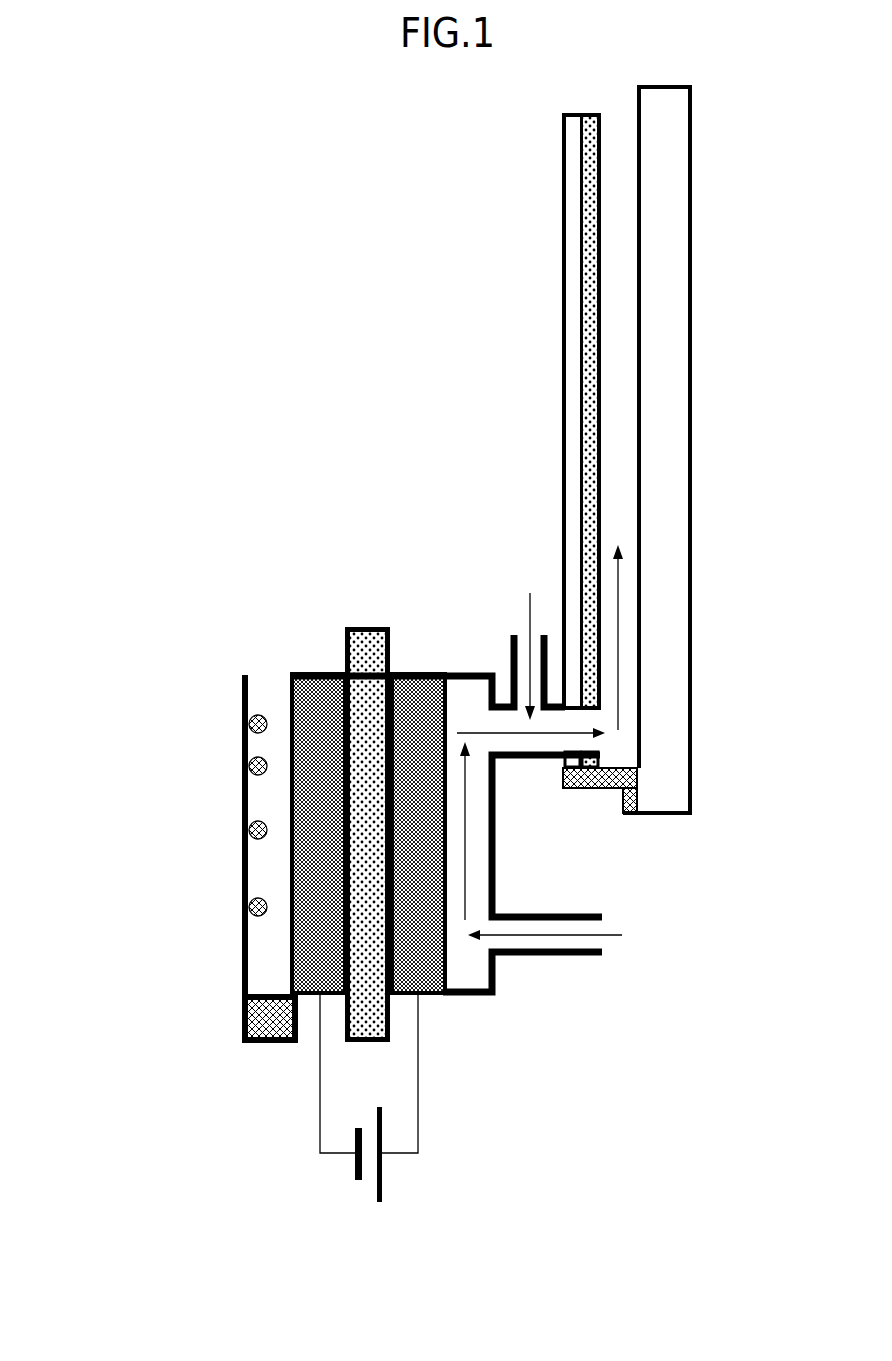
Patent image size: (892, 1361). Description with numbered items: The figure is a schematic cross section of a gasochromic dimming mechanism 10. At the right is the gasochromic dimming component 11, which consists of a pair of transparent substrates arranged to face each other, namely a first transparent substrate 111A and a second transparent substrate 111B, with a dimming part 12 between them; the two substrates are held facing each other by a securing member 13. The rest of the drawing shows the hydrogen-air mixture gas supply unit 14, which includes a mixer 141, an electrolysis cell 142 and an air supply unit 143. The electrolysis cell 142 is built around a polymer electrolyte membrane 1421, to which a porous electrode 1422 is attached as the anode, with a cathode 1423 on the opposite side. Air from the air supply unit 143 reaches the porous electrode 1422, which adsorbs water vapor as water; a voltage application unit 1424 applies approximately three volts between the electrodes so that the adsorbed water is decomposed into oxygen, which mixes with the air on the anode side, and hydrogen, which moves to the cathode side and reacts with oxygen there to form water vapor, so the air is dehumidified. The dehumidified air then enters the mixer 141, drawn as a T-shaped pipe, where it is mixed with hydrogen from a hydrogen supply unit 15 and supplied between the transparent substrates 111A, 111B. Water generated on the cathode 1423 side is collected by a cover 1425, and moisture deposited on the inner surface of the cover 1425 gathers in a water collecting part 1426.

The gasochromic dimming mechanism 10 is at (68, 112).
The gasochromic dimming component 11 is at (777, 120).
The first transparent substrate 111A is at (678, 140).
The second transparent substrate 111B is at (572, 188).
The dimming part 12 is at (590, 242).
The securing member 13 is at (627, 782).
The hydrogen-air mixture gas supply unit 14 is at (735, 893).
The mixer 141 is at (536, 770).
The electrolysis cell 142 is at (537, 962).
The air supply unit 143 is at (433, 1010).
The hydrogen supply unit 15 is at (561, 670).
The polymer electrolyte membrane 1421 is at (367, 632).
The porous electrode 1422 is at (425, 678).
The cathode 1423 is at (308, 678).
The voltage application unit 1424 is at (362, 1218).
The cover 1425 is at (243, 703).
The water collecting part 1426 is at (252, 995).